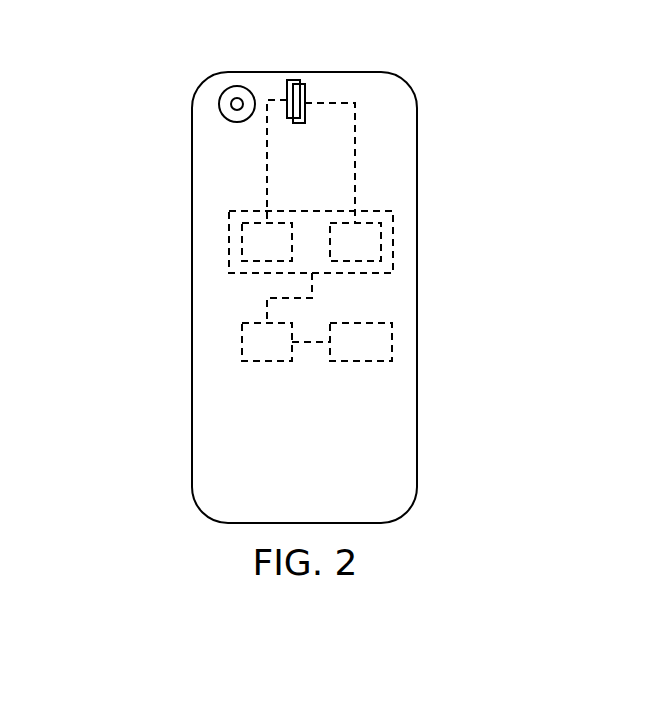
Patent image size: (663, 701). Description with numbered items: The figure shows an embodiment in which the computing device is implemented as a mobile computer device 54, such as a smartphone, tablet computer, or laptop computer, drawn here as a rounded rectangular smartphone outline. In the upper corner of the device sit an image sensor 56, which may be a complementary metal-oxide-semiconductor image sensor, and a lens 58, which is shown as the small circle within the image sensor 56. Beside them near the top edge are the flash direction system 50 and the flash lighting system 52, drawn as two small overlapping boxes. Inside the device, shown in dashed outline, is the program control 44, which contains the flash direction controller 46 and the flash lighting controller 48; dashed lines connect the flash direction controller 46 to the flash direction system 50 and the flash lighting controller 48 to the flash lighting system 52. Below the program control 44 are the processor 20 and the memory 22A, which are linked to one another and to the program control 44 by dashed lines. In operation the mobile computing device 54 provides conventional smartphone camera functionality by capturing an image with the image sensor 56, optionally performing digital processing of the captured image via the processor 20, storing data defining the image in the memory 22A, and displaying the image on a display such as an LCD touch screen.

The mobile computer device 54 is at (104, 44).
The image sensor 56 is at (232, 100).
The lens 58 is at (219, 108).
The flash direction system 50 is at (290, 80).
The flash lighting system 52 is at (305, 84).
The program control 44 is at (229, 224).
The flash direction controller 46 is at (255, 253).
The flash lighting controller 48 is at (343, 253).
The processor 20 is at (255, 353).
The memory 22A is at (343, 353).